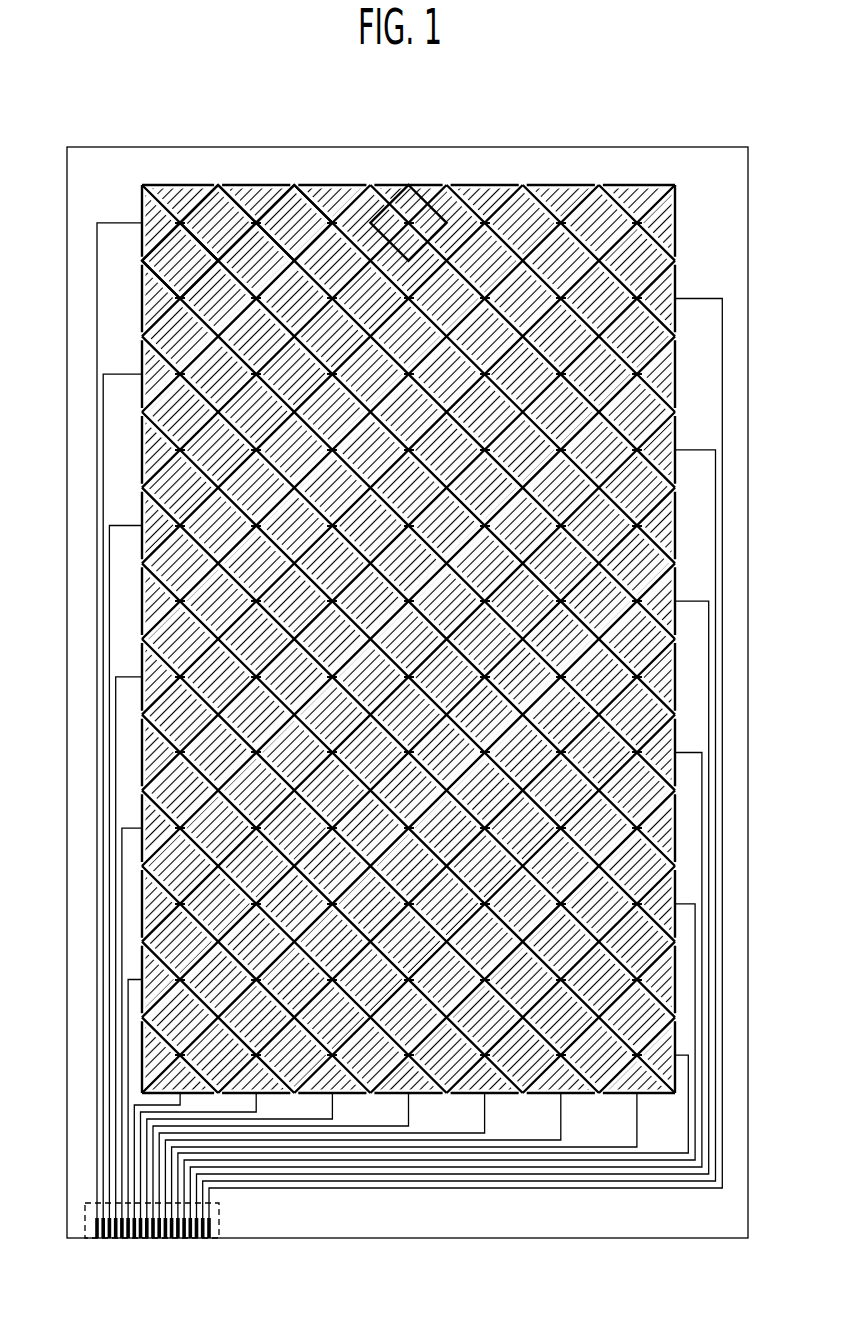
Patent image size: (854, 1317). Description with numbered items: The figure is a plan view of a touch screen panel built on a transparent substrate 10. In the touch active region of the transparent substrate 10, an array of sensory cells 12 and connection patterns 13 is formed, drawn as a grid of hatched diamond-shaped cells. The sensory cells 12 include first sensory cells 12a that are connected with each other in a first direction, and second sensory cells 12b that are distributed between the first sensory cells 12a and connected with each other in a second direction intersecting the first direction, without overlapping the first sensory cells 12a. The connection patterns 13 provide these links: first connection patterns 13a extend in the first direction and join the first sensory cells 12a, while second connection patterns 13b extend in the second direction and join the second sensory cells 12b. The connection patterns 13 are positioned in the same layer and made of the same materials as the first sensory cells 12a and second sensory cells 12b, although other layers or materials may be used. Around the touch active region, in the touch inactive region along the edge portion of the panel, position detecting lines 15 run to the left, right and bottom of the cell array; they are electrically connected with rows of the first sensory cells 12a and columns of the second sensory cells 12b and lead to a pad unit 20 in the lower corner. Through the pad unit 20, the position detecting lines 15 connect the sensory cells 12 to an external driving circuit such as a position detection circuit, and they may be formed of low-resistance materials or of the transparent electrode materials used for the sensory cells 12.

The transparent substrate 10 is at (548, 147).
The sensory cells 12 is at (408, 575).
The first sensory cells 12a is at (177, 247).
The second sensory cells 12b is at (167, 97).
The connection patterns 13 is at (408, 575).
The first connection patterns 13a is at (318, 215).
The second connection patterns 13b is at (422, 179).
The position detecting lines 15 is at (97, 292).
The pad unit 20 is at (220, 1220).